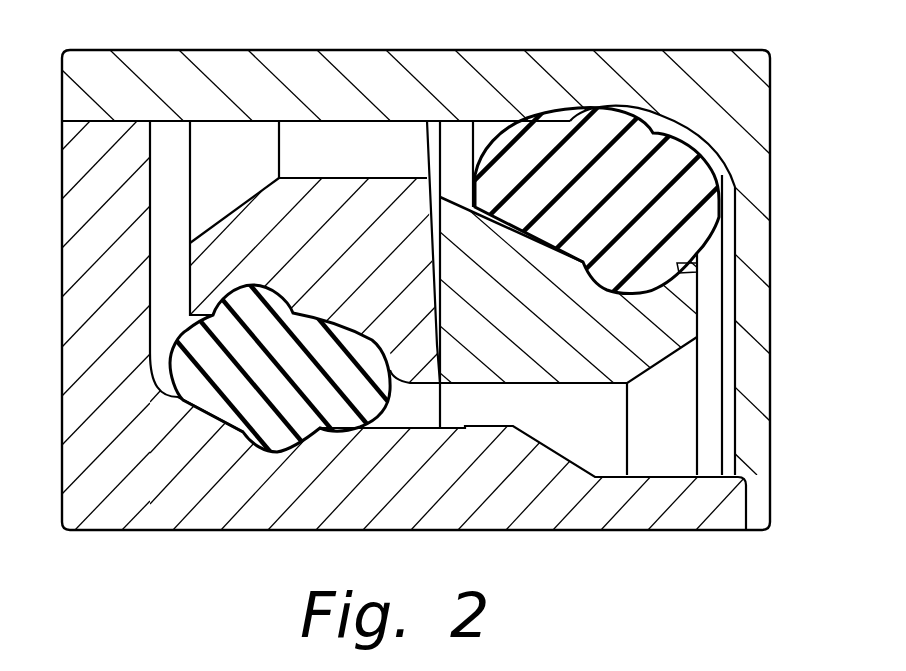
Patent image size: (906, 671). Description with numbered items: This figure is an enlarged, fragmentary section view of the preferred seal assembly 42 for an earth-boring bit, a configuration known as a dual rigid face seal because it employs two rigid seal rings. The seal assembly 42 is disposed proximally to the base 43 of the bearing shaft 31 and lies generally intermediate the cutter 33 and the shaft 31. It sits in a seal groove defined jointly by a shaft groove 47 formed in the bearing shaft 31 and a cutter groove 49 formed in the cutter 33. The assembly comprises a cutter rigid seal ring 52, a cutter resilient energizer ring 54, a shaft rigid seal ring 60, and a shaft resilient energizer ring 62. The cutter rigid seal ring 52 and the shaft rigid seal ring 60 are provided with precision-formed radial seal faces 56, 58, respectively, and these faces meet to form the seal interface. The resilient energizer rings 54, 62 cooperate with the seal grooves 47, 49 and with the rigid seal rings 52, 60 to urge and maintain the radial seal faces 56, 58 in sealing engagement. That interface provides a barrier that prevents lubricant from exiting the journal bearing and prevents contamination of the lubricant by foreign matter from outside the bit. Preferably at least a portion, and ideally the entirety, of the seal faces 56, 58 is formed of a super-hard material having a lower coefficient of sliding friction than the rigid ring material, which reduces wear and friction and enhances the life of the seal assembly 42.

The seal assembly 42 is at (111, 34).
The base of bearing shaft 43 is at (233, 60).
The bearing shaft 31 is at (636, 67).
The shaft groove 47 is at (722, 132).
The cutter rigid seal ring 52 is at (210, 261).
The radial seal face 58 is at (433, 143).
The radial seal face 56 is at (428, 135).
The shaft resilient energizer ring 62 is at (627, 263).
The shaft rigid seal ring 60 is at (643, 347).
The cutter resilient energizer ring 54 is at (287, 435).
The cutter groove 49 is at (400, 422).
The cutter 33 is at (695, 510).